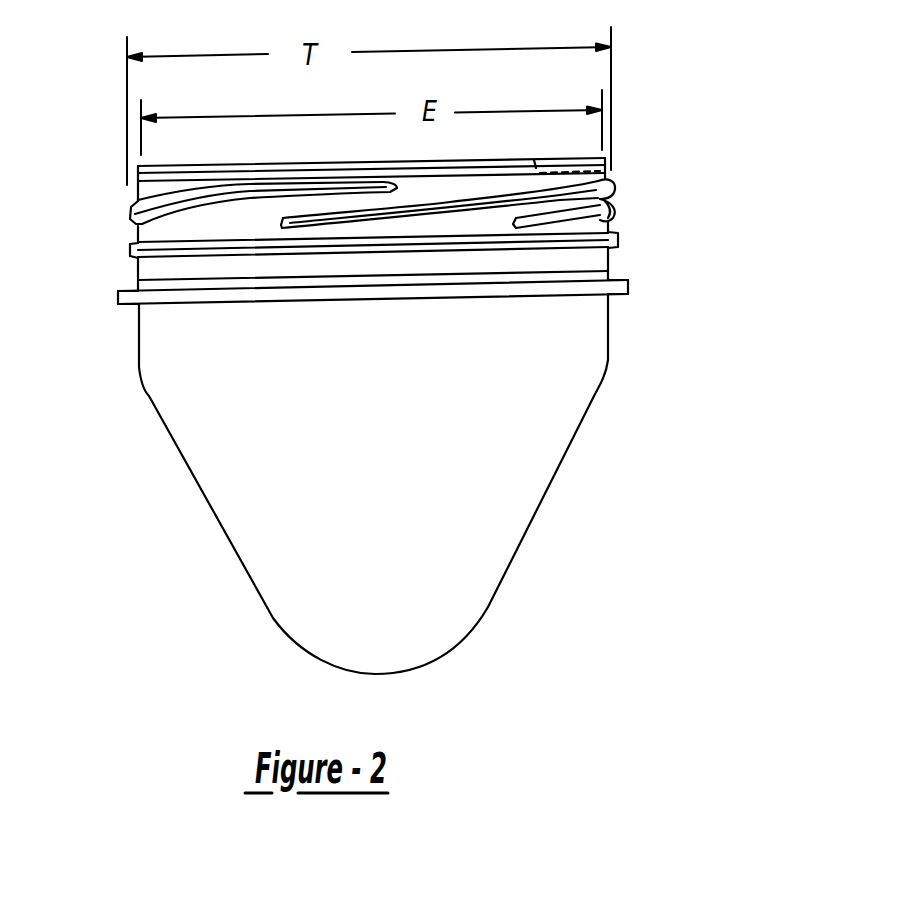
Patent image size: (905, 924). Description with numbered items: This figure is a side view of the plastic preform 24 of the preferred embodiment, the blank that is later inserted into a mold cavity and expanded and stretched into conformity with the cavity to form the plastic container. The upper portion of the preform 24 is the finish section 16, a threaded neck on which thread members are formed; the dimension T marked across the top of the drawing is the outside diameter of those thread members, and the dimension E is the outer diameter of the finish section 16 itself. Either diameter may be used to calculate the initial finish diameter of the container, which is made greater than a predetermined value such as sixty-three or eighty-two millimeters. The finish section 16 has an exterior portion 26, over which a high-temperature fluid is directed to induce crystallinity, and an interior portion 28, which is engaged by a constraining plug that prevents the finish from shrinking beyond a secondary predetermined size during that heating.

The finish section 16 is at (613, 218).
The preform 24 is at (456, 526).
The exterior portion 26 is at (150, 189).
The interior portion 28 is at (532, 158).